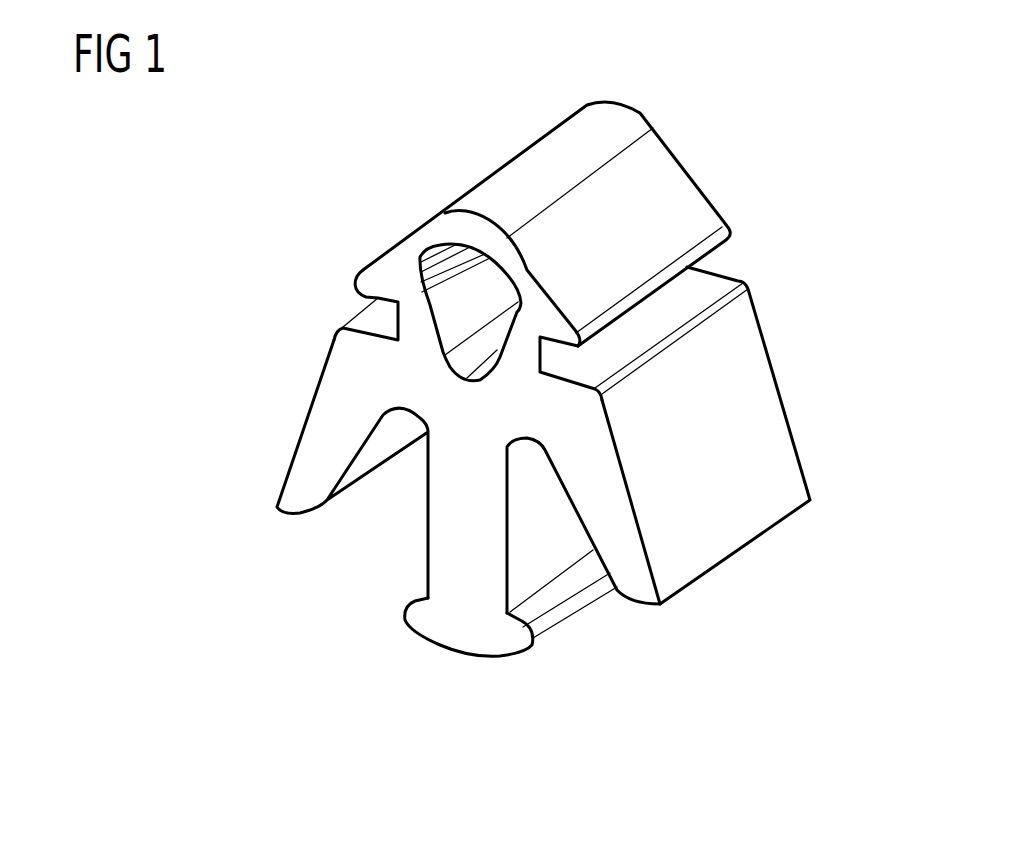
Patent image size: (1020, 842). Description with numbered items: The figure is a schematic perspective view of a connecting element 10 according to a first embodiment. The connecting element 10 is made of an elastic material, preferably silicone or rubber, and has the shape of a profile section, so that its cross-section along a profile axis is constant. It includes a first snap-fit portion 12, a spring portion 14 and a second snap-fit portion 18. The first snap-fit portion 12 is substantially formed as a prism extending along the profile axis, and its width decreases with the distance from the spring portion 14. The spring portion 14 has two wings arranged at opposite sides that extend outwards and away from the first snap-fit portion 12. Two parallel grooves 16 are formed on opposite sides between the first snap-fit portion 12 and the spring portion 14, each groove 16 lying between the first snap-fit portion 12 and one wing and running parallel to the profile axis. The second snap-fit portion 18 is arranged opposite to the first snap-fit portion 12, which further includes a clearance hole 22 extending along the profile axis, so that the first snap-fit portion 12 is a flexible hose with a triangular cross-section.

The connecting element 10 is at (738, 104).
The first snap-fit portion 12 is at (382, 282).
The spring portion 14 is at (712, 538).
The groove 16 is at (542, 355).
The second snap-fit portion 18 is at (468, 625).
The clearance hole 22 is at (458, 290).